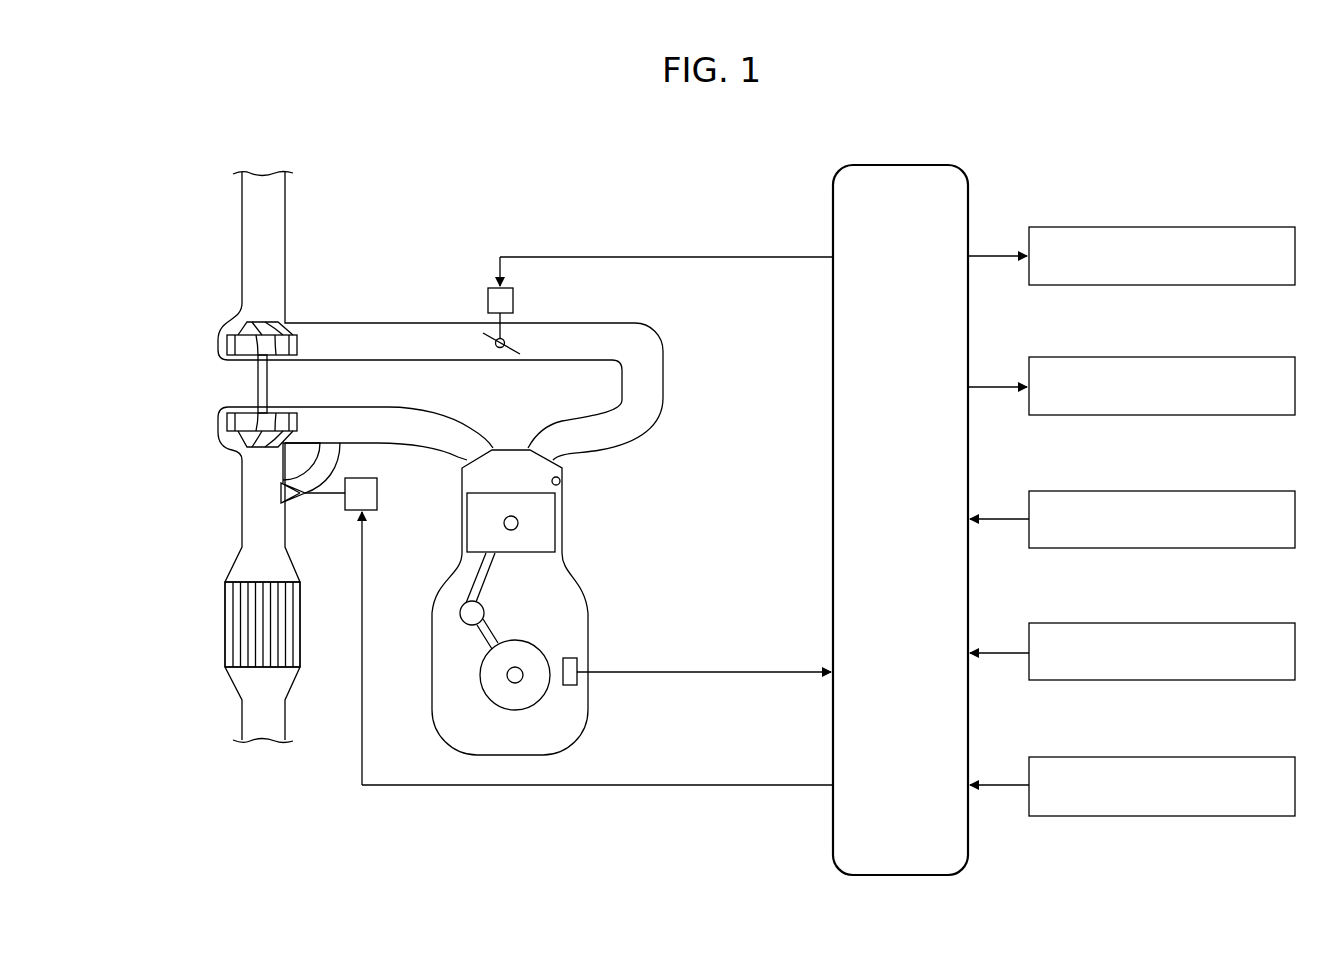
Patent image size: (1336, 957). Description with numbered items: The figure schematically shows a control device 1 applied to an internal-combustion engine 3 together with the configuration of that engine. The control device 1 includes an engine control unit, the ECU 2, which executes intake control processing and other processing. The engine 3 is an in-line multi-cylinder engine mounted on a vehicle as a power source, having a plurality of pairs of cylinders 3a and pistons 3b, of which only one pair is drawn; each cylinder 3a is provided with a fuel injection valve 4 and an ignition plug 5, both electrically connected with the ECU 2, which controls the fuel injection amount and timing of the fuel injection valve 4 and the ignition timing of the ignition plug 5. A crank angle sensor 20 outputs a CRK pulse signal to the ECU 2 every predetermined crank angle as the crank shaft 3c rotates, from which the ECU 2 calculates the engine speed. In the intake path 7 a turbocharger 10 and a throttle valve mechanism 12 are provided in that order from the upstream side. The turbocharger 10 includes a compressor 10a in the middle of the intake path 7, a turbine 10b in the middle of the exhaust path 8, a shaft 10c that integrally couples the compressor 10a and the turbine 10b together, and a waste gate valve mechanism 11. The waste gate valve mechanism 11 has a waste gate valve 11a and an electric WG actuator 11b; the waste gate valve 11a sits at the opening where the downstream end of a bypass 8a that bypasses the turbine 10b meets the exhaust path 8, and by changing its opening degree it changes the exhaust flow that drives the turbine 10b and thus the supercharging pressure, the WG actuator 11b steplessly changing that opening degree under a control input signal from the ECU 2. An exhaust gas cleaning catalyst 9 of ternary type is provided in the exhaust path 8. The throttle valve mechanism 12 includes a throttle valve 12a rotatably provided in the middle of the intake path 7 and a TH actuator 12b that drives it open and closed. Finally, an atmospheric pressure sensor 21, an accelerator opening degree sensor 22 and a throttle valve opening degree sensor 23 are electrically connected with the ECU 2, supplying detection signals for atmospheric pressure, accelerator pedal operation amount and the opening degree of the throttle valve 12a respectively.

The control device 1 is at (1165, 118).
The engine control unit (ECU) 2 is at (912, 165).
The internal-combustion engine 3 is at (611, 606).
The cylinder 3a is at (560, 482).
The piston 3b is at (557, 525).
The crank shaft 3c is at (515, 675).
The fuel injection valve 4 is at (1238, 227).
The ignition plug 5 is at (1238, 357).
The intake path 7 is at (242, 252).
The exhaust path 8 is at (420, 410).
The bypass 8a is at (330, 458).
The exhaust gas cleaning catalyst 9 is at (225, 630).
The turbocharger 10 is at (269, 356).
The compressor 10a is at (262, 338).
The turbine 10b is at (300, 413).
The shaft 10c is at (258, 385).
The waste gate valve mechanism 11 is at (589, 631).
The waste gate valve 11a is at (298, 508).
The WG actuator 11b is at (372, 512).
The throttle valve mechanism 12 is at (660, 285).
The throttle valve 12a is at (505, 350).
The TH actuator 12b is at (513, 300).
The crank angle sensor 20 is at (570, 658).
The atmospheric pressure sensor 21 is at (1238, 491).
The accelerator opening degree sensor 22 is at (1238, 623).
The throttle valve opening degree sensor 23 is at (1238, 757).